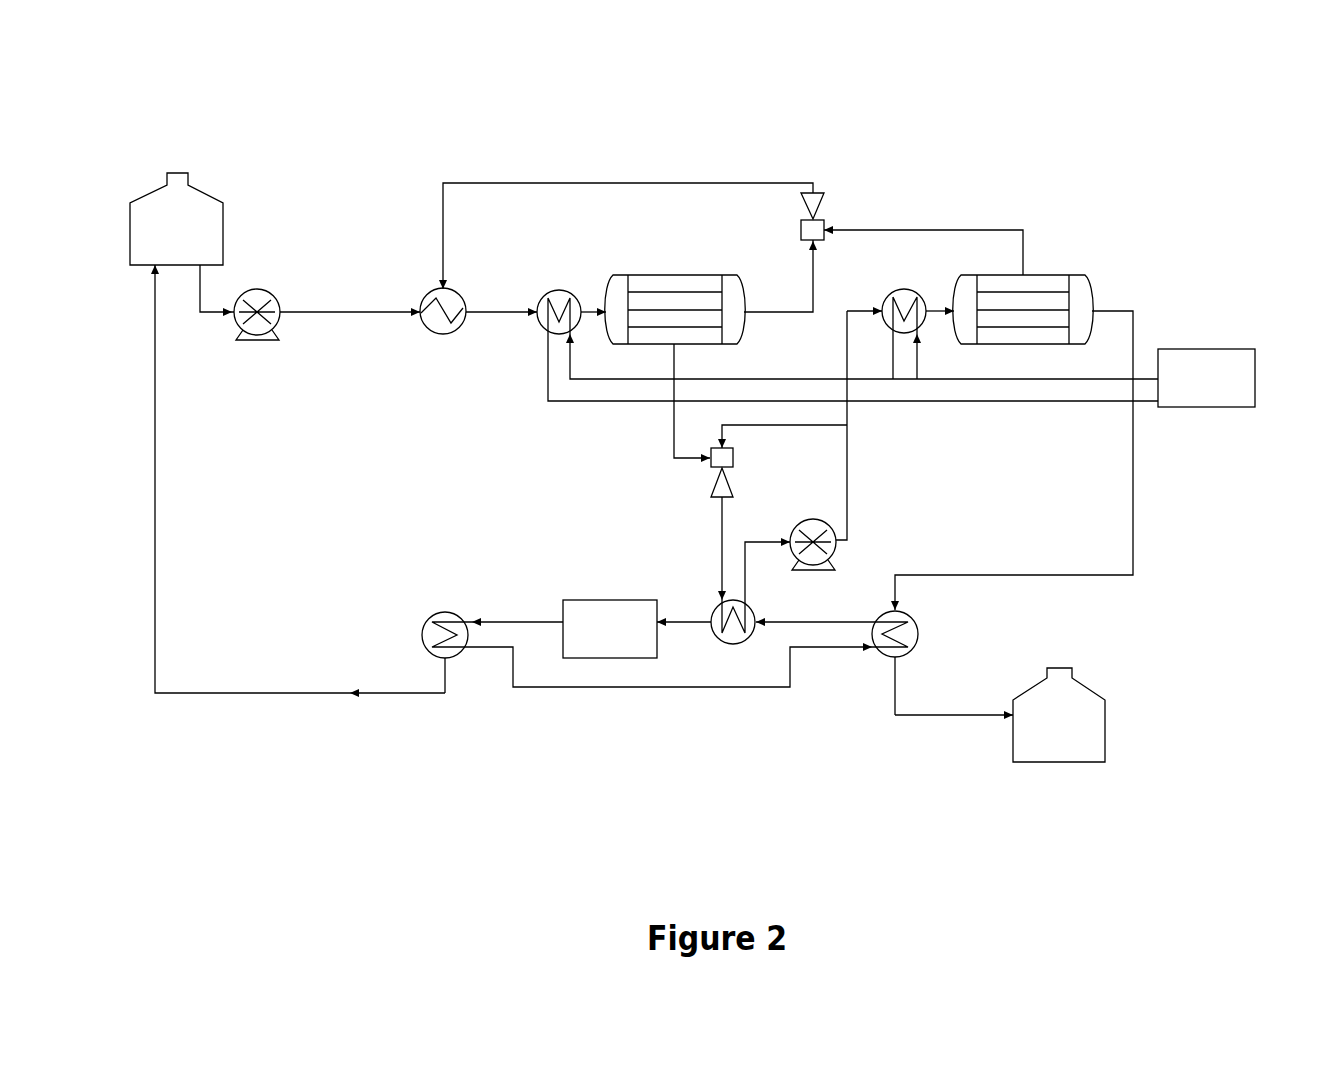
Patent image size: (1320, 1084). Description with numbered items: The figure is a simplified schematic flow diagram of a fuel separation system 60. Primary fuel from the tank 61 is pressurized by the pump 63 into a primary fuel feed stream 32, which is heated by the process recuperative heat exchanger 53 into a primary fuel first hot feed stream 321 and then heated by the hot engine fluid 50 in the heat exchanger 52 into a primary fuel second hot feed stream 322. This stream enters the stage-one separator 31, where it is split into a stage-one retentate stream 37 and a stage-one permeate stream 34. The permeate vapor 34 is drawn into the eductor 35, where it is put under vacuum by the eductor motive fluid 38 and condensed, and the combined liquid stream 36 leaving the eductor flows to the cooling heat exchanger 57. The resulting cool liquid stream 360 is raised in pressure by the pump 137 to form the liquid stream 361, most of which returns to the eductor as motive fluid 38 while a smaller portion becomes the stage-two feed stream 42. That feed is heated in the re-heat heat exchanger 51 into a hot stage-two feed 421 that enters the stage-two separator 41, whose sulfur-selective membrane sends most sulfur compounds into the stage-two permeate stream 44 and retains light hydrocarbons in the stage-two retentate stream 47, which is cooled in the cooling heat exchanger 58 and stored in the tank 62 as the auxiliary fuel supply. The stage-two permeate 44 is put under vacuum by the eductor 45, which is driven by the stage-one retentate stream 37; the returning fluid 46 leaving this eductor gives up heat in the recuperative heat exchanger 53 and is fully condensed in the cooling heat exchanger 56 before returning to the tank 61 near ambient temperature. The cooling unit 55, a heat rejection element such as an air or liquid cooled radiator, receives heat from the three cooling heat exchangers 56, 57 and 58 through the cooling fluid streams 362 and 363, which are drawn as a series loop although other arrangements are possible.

The stage-one separator 31 is at (662, 275).
The primary fuel feed stream 32 is at (358, 308).
The primary fuel first hot feed stream 321 is at (502, 317).
The primary fuel second hot feed stream 322 is at (593, 306).
The stage-one permeate stream 34 is at (667, 358).
The eductor 35 is at (698, 473).
The combined liquid stream 36 is at (715, 538).
The cool liquid stream 360 is at (760, 545).
The liquid stream 361 is at (848, 473).
The cooling fluid stream 362 is at (682, 627).
The cooling fluid stream 363 is at (537, 627).
The stage-one retentate stream 37 is at (786, 309).
The eductor motive fluid 38 is at (780, 433).
The stage-two separator 41 is at (1080, 275).
The stage-two feed stream 42 is at (852, 343).
The hot stage-two feed 421 is at (937, 315).
The stage-two permeate stream 44 is at (1020, 228).
The eductor 45 is at (822, 193).
The returning fluid 46 is at (493, 183).
The stage-two retentate stream 47 is at (1137, 537).
The hot engine fluid 50 is at (1205, 349).
The re-heat heat exchanger 51 is at (904, 289).
The heat exchanger 52 is at (573, 295).
The process recuperative heat exchanger 53 is at (425, 321).
The cooling unit 55 is at (607, 658).
The cooling heat exchanger 56 is at (450, 650).
The cooling heat exchanger 57 is at (732, 645).
The cooling heat exchanger 58 is at (868, 647).
The system 60 is at (272, 795).
The tank 61 is at (222, 204).
The tank 62 is at (1013, 753).
The pump 63 is at (228, 342).
The pump 137 is at (830, 563).